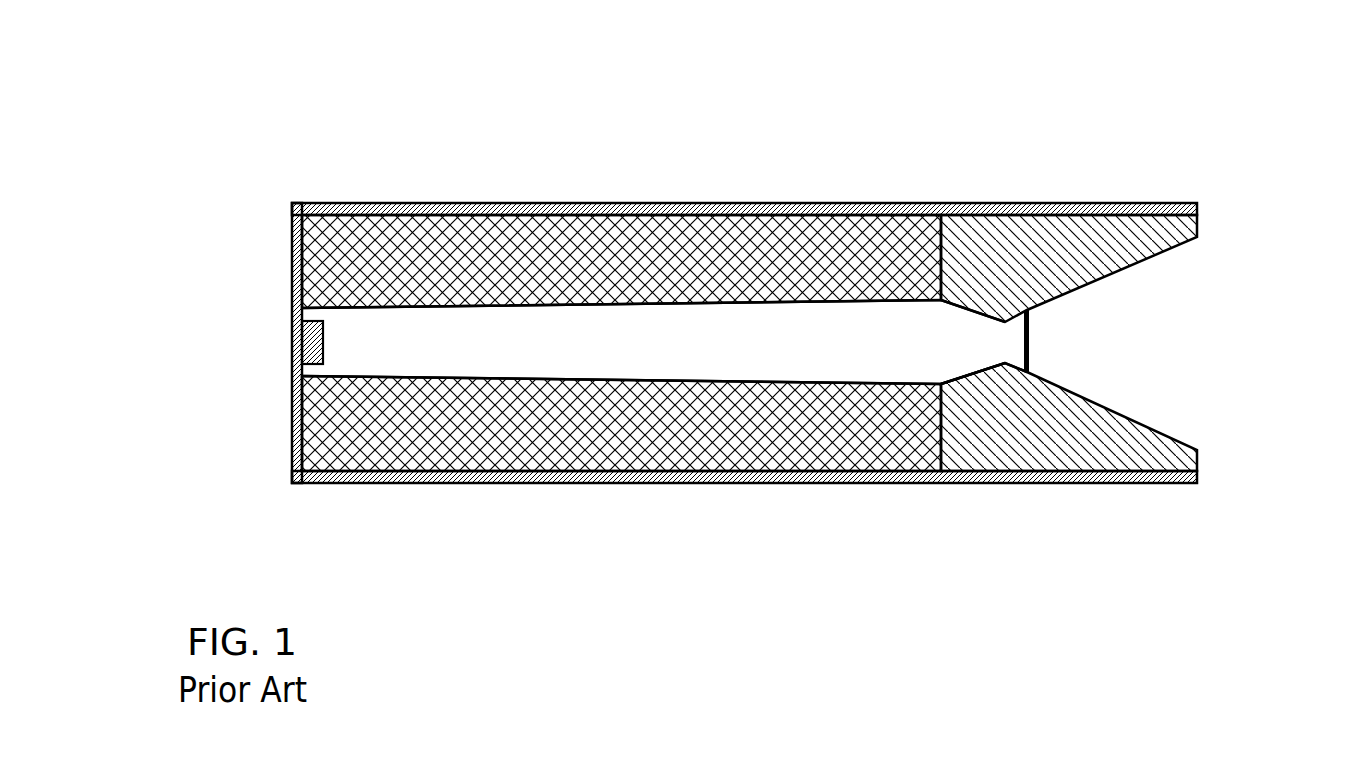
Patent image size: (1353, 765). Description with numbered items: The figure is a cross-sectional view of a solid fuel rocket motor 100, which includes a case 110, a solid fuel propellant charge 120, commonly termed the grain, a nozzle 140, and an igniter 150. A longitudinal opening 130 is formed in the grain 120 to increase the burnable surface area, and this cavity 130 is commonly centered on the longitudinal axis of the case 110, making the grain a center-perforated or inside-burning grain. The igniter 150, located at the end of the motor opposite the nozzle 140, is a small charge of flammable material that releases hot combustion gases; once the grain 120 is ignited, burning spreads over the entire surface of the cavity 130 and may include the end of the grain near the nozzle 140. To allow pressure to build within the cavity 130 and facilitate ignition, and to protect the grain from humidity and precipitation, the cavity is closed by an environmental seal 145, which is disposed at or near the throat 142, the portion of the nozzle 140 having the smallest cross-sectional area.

The solid fuel rocket motor 100 is at (456, 110).
The case 110 is at (1008, 203).
The solid fuel propellant charge 120 is at (642, 247).
The longitudinal opening 130 is at (642, 342).
The nozzle 140 is at (1123, 270).
The throat 142 is at (1002, 363).
The environmental seal 145 is at (1030, 345).
The igniter 150 is at (303, 342).